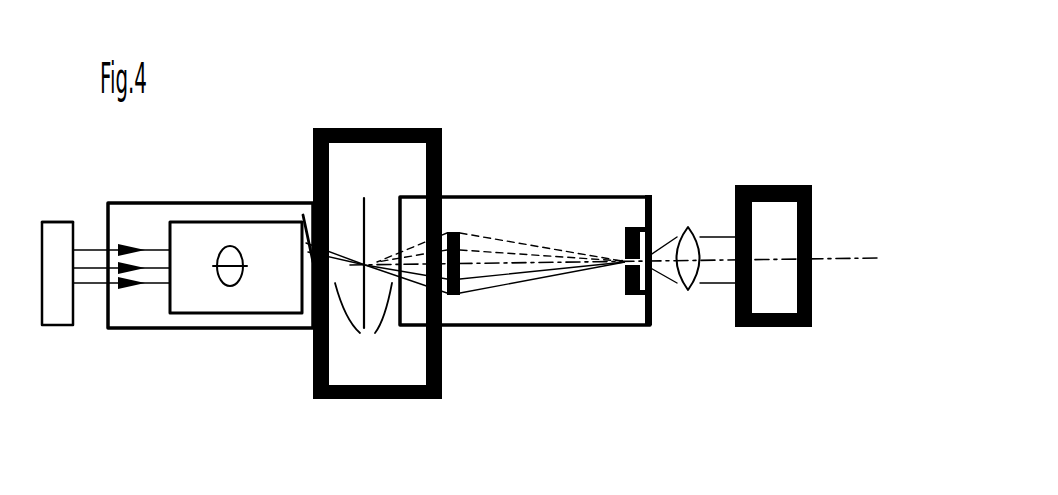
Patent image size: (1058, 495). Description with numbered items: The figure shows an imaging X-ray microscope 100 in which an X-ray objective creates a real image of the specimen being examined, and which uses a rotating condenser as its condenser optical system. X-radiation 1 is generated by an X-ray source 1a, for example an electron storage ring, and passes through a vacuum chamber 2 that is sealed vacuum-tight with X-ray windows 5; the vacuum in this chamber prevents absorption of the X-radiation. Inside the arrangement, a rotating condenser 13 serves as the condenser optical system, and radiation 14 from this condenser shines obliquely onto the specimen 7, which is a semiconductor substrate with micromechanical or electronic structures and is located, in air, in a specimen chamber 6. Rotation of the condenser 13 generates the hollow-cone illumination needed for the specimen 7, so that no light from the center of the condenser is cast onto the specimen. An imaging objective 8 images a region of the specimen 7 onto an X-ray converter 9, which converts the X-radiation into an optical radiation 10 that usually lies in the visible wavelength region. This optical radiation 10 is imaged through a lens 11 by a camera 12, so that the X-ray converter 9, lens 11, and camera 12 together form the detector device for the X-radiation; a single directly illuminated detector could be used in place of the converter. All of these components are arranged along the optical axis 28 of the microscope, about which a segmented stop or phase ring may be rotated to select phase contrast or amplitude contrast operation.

The X-radiation 1 is at (75, 287).
The X-ray source 1a is at (57, 222).
The vacuum chamber 2 is at (202, 337).
The X-ray windows 5 is at (118, 292).
The specimen chamber 6 is at (323, 122).
The specimen 7 is at (358, 193).
The imaging objective 8 is at (433, 223).
The X-ray converter 9 is at (615, 237).
The optical radiation 10 is at (668, 232).
The lens 11 is at (697, 227).
The camera 12 is at (758, 177).
The rotating condenser 13 is at (185, 217).
The radiation 14 is at (303, 213).
The optical axis 28 is at (839, 256).
The X-ray microscope 100 is at (542, 363).